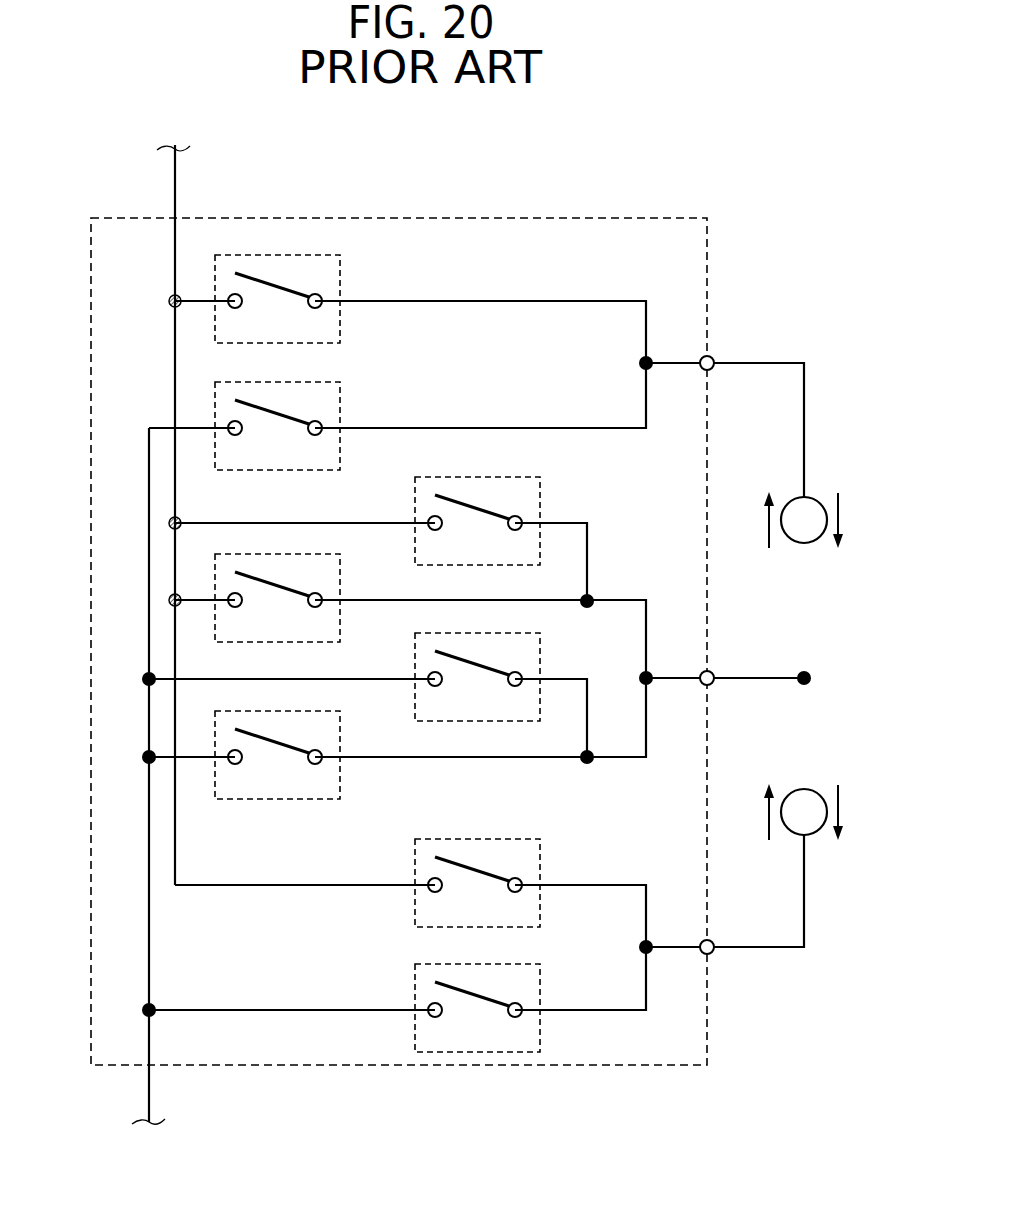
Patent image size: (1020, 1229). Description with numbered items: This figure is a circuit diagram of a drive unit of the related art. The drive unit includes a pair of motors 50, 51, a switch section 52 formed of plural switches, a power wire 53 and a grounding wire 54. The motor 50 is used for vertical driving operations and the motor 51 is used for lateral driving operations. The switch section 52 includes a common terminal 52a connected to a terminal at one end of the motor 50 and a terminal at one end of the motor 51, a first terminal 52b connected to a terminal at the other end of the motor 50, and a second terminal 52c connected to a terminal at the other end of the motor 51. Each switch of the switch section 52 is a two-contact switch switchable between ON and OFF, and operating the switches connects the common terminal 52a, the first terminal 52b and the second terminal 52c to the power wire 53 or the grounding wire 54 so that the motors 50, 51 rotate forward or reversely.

The motor 50 is at (790, 502).
The motor 51 is at (790, 794).
The switch section 52 is at (500, 606).
The common terminal 52a is at (712, 672).
The first terminal 52b is at (712, 357).
The second terminal 52c is at (712, 953).
The power wire 53 is at (175, 172).
The grounding wire 54 is at (149, 1088).